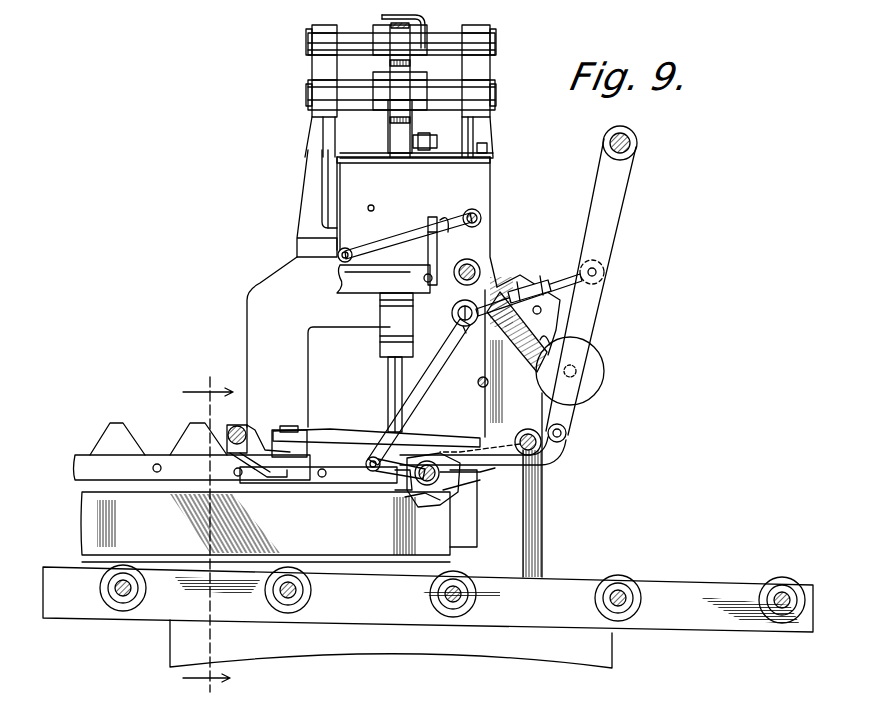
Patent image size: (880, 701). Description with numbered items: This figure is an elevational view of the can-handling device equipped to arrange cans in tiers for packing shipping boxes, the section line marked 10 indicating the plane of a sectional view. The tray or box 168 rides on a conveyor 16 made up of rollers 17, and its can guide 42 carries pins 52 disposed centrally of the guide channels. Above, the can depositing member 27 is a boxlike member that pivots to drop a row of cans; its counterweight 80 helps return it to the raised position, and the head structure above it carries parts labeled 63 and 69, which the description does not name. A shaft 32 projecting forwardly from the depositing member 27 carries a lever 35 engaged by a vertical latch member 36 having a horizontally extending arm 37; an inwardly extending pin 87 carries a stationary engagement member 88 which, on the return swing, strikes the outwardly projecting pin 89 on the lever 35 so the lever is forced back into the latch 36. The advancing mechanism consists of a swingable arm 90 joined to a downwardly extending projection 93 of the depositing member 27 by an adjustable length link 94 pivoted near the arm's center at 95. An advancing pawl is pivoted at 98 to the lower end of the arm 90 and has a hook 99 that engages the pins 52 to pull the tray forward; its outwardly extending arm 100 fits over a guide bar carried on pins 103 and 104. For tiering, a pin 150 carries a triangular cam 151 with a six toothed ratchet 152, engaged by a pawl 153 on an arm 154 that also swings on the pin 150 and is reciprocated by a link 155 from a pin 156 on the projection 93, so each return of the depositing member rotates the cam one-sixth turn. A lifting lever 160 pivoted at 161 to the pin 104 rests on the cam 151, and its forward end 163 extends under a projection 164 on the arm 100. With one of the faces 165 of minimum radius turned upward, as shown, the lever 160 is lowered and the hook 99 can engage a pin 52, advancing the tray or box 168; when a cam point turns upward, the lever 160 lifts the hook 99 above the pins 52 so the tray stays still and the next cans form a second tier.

The section line 10 is at (205, 534).
The conveyor 16 is at (673, 590).
The rollers 17 is at (780, 598).
The can depositing member 27 is at (478, 183).
The shaft 32 is at (338, 258).
The lever 35 is at (367, 252).
The vertical latch member 36 is at (413, 232).
The horizontally extending arm 37 is at (360, 292).
The can guide 42 is at (113, 440).
The pins 52 is at (157, 464).
The spool 63 is at (392, 142).
The fitting 69 is at (425, 150).
The counterweight 80 is at (598, 370).
The inwardly extending pin 87 is at (482, 218).
The stationary engagement member 88 is at (450, 220).
The outwardly projecting pin 89 is at (466, 262).
The swingable arm 90 is at (606, 226).
The downwardly extending projection 93 is at (452, 304).
The adjustable length link 94 is at (525, 290).
The pivot 95 is at (606, 272).
The pivot 98 is at (570, 430).
The hook 99 is at (266, 480).
The outwardly extending arm 100 is at (290, 450).
The pin 103 is at (247, 427).
The pin 104 is at (540, 460).
The pin 150 is at (458, 483).
The triangular cam 151 is at (470, 480).
The six toothed ratchet 152 is at (456, 494).
The pawl 153 is at (398, 495).
The arm 154 is at (392, 472).
The link 155 is at (424, 395).
The pin 156 is at (463, 327).
The lifting lever 160 is at (513, 430).
The pivot 161 is at (569, 440).
The forward end 163 is at (318, 431).
The projection 164 is at (292, 430).
The faces 165 is at (417, 506).
The tray or box 168 is at (100, 525).